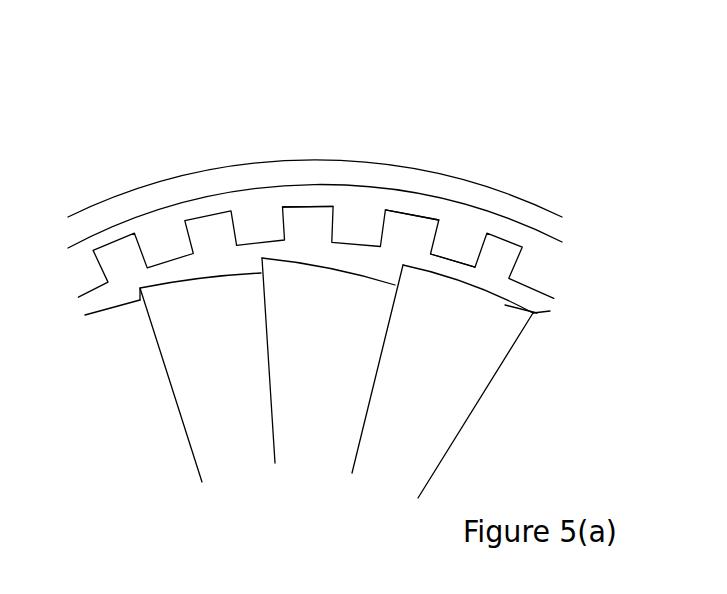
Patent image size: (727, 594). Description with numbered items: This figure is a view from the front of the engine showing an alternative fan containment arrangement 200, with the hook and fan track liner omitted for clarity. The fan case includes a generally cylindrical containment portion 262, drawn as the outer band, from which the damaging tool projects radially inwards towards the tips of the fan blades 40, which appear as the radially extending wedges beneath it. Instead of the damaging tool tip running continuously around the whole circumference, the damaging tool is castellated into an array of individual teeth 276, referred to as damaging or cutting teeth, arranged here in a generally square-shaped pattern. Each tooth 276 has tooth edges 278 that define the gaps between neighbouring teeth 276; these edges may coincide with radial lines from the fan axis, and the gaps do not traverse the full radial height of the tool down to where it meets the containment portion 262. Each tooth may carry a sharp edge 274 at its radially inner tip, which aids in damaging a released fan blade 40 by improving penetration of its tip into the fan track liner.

The fan containment arrangement 200 is at (318, 176).
The generally cylindrical containment portion 262 is at (198, 185).
The teeth 276 is at (160, 238).
The tooth edges 278 is at (318, 227).
The sharp edge 274 is at (459, 250).
The fan blades 40 is at (213, 377).